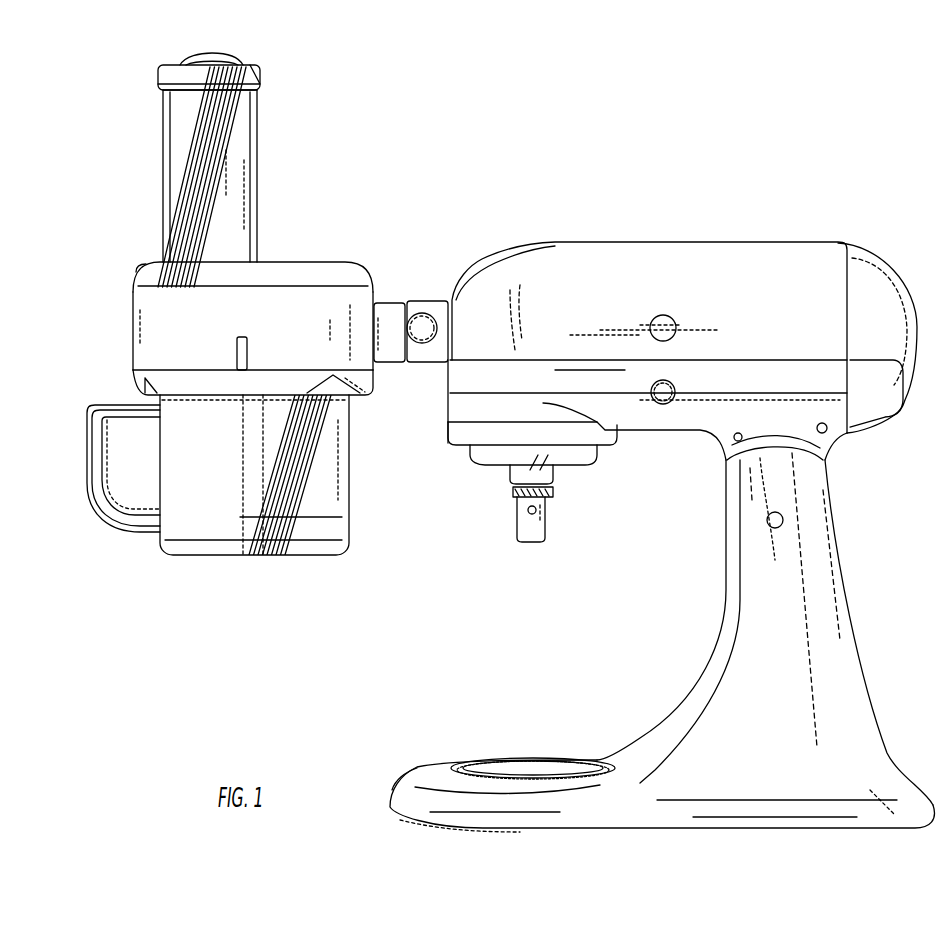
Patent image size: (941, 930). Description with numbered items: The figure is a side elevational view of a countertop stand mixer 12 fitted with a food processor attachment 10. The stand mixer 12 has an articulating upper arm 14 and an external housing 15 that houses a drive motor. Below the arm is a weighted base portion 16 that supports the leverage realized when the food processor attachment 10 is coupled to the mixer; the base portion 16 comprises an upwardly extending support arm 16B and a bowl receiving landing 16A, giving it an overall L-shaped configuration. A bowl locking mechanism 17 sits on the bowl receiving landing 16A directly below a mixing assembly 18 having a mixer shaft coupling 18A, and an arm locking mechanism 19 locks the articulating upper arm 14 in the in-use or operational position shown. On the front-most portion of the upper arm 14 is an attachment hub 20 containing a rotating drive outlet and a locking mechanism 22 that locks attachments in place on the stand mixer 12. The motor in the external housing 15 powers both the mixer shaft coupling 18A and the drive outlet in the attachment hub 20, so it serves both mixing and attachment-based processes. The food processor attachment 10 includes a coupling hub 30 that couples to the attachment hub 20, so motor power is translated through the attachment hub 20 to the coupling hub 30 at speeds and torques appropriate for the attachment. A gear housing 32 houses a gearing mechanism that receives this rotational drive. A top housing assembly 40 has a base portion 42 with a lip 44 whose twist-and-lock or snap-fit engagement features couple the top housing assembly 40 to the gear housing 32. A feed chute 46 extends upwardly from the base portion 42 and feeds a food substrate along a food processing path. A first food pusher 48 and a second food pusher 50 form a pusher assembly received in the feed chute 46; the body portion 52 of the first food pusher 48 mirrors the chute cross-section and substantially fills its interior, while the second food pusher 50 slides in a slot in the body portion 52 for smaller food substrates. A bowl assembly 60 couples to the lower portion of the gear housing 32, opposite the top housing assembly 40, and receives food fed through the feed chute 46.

The food processor attachment 10 is at (140, 180).
The countertop stand mixer 12 is at (792, 216).
The articulating upper arm 14 is at (604, 242).
The external housing 15 is at (737, 258).
The base portion 16 is at (880, 782).
The bowl receiving landing 16A is at (391, 790).
The upwardly extending support arm 16B is at (843, 605).
The bowl locking mechanism 17 is at (516, 757).
The mixing assembly 18 is at (498, 493).
The mixer shaft coupling 18A is at (547, 513).
The arm locking mechanism 19 is at (663, 404).
The attachment hub 20 is at (427, 298).
The locking mechanism 22 is at (422, 318).
The coupling hub 30 is at (388, 304).
The gear housing 32 is at (142, 320).
The top housing assembly 40 is at (288, 251).
The base portion 42 is at (316, 259).
The lip 44 is at (143, 285).
The feed chute 46 is at (258, 151).
The first food pusher 48 is at (260, 82).
The second food pusher 50 is at (212, 54).
The body portion 52 is at (168, 152).
The bowl assembly 60 is at (96, 523).